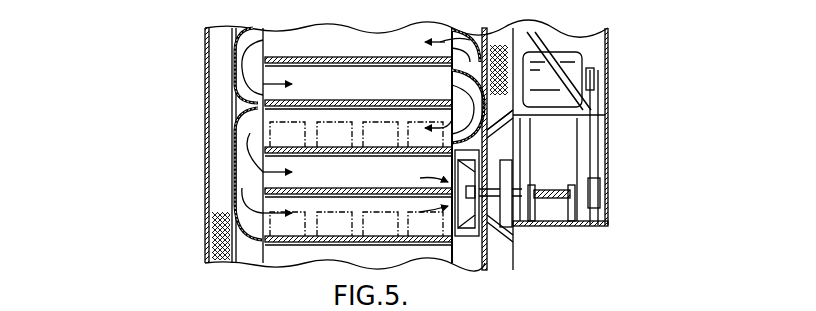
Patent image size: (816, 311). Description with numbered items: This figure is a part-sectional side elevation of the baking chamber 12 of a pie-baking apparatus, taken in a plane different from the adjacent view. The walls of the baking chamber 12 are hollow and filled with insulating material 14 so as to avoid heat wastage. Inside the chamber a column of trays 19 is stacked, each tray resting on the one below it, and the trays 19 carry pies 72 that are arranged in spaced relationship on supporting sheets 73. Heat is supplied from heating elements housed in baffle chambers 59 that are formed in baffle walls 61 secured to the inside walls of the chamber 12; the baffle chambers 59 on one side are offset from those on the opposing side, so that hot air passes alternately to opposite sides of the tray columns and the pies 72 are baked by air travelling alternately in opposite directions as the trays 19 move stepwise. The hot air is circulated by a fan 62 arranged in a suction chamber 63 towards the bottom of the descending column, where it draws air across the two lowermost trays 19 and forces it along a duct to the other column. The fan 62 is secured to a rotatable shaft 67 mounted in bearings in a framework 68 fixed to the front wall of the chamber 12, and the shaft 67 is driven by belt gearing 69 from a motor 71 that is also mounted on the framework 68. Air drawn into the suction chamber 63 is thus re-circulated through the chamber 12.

The baking chamber 12 is at (208, 47).
The insulating material 14 is at (208, 222).
The trays 19 is at (305, 246).
The baffle chambers 59 is at (236, 165).
The baffle walls 61 is at (245, 100).
The fan 62 is at (468, 218).
The suction chamber 63 is at (472, 235).
The rotatable shaft 67 is at (542, 194).
The framework 68 is at (580, 150).
The belt gearing 69 is at (597, 125).
The motor 71 is at (570, 62).
The pies 72 is at (395, 130).
The supporting sheets 73 is at (333, 192).